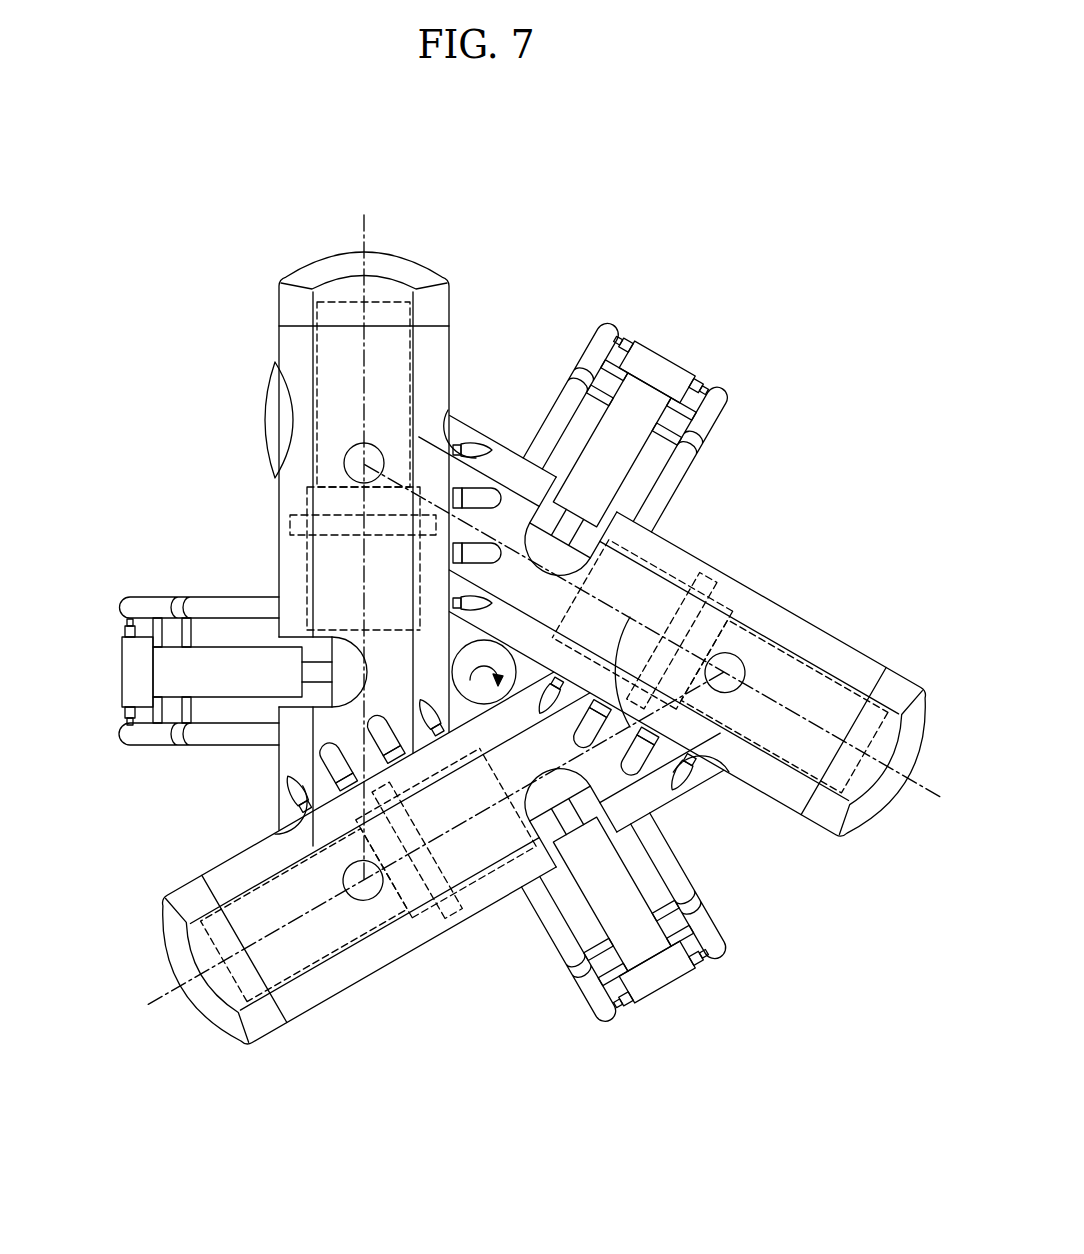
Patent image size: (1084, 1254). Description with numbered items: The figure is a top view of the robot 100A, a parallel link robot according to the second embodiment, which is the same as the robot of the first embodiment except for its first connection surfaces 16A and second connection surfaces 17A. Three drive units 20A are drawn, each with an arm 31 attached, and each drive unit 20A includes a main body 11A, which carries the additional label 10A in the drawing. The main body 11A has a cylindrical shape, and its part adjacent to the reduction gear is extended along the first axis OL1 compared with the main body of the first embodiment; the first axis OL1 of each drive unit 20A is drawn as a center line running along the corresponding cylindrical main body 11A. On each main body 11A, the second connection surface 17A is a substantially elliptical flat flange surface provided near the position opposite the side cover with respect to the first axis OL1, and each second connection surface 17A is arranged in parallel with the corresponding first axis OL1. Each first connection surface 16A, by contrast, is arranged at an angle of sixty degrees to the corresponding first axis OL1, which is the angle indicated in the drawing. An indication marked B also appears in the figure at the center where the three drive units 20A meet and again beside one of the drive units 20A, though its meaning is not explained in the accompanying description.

The robot 100A is at (586, 228).
The drive unit 20A is at (248, 407).
The main body 11A is at (290, 349).
The casing 10A is at (537, 656).
The first connection surface 16A is at (434, 527).
The second connection surface 17A is at (460, 447).
The arm 31 is at (662, 348).
The first axis OL1 is at (530, 601).
The rotation direction B is at (885, 857).